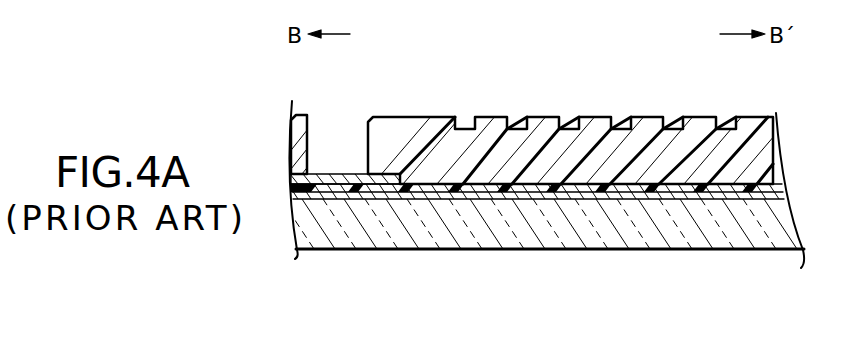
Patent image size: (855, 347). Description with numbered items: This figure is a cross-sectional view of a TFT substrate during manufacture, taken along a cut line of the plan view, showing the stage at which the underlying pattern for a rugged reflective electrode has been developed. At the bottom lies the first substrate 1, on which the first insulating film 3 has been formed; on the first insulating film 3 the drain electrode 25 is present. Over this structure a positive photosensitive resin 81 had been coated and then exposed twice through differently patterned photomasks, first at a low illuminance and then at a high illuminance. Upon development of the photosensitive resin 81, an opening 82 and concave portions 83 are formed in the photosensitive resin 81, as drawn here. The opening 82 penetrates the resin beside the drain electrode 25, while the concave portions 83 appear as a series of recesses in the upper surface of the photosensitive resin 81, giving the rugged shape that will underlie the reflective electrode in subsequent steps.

The first substrate 1 is at (715, 232).
The first insulating film 3 is at (594, 190).
The drain electrode 25 is at (335, 184).
The photosensitive resin 81 is at (482, 184).
The opening 82 is at (340, 150).
The concave portions 83 is at (569, 126).